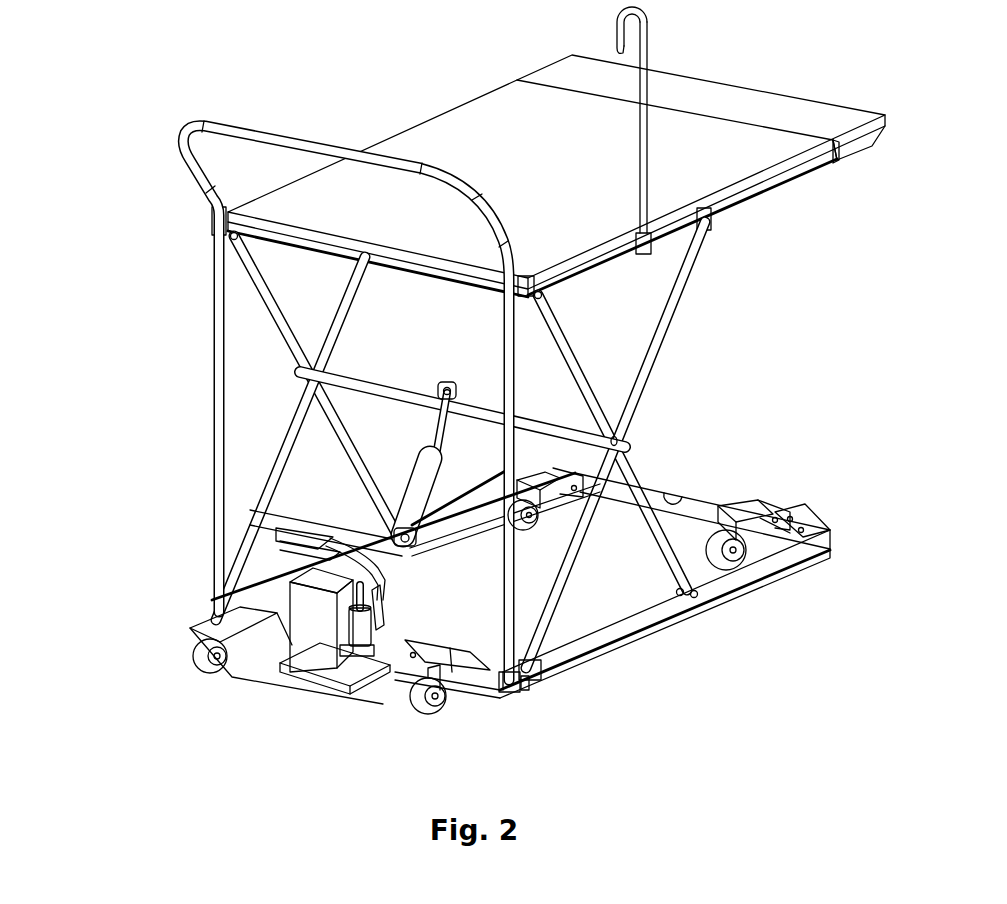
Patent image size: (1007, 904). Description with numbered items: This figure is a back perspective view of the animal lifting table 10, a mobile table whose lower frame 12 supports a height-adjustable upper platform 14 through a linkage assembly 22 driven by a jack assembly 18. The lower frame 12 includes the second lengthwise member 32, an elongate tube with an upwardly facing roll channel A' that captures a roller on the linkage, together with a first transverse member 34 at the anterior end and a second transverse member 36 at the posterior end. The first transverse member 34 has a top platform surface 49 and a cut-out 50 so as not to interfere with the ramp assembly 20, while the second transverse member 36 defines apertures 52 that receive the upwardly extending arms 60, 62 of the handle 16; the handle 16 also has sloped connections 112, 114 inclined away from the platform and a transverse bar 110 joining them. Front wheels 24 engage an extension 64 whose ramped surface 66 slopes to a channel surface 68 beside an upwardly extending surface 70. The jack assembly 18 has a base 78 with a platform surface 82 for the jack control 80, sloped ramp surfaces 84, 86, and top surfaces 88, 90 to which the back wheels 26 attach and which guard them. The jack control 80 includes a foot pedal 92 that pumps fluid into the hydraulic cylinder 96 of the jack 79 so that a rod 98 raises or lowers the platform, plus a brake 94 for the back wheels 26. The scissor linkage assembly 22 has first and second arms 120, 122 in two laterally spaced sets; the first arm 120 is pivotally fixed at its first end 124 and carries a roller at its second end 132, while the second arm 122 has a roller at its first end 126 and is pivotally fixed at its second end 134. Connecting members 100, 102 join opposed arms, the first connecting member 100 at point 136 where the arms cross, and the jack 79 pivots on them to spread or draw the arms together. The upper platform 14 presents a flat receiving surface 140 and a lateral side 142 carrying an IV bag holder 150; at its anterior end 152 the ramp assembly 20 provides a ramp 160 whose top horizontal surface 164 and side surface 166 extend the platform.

The animal lifting table 10 is at (855, 338).
The lower frame 12 is at (813, 568).
The upper platform 14 is at (563, 173).
The handle 16 is at (340, 382).
The jack assembly 18 is at (313, 645).
The ramp assembly 20 is at (856, 119).
The linkage assembly 22 is at (626, 440).
The front wheels 24 is at (557, 476).
The back wheels 26 is at (205, 672).
The second lengthwise member 32 is at (250, 597).
The first transverse member 34 is at (731, 506).
The second transverse member 36 is at (497, 693).
The top platform surface 49 is at (427, 645).
The cut-out 50 is at (673, 491).
The apertures 52 is at (523, 690).
The upwardly extending arm 60 is at (503, 342).
The upwardly extending arm 62 is at (215, 322).
The extension 64 is at (526, 478).
The ramped surface 66 is at (780, 530).
The channel surface 68 is at (814, 542).
The upwardly extending surface 70 is at (790, 522).
The base 78 is at (450, 648).
The jack 79 is at (408, 481).
The jack control 80 is at (297, 672).
The platform surface 82 is at (367, 700).
The sloped ramp surface 84 is at (377, 695).
The sloped ramp surface 86 is at (238, 654).
The top surface 88 is at (435, 669).
The top surface 90 is at (210, 634).
The foot pedal 92 is at (306, 533).
The brake 94 is at (338, 660).
The hydraulic cylinder 96 is at (415, 517).
The rod 98 is at (438, 426).
The first connecting member 100 is at (362, 378).
The second connecting member 102 is at (343, 530).
The transverse bar 110 is at (272, 142).
The sloped connection 112 is at (490, 223).
The sloped connection 114 is at (200, 175).
The first arm 120 is at (287, 327).
The second arm 122 is at (353, 293).
The first end 124 is at (682, 584).
The first end 126 is at (535, 666).
The second end 132 is at (537, 312).
The second end 134 is at (704, 230).
The point 136 is at (611, 430).
The receiving surface 140 is at (574, 162).
The lateral side 142 is at (737, 197).
The IV bag holder 150 is at (650, 40).
The anterior end 152 is at (767, 126).
The ramp 160 is at (829, 108).
The top horizontal surface 164 is at (714, 114).
The side surface 166 is at (851, 158).
The roll channel A' is at (459, 480).